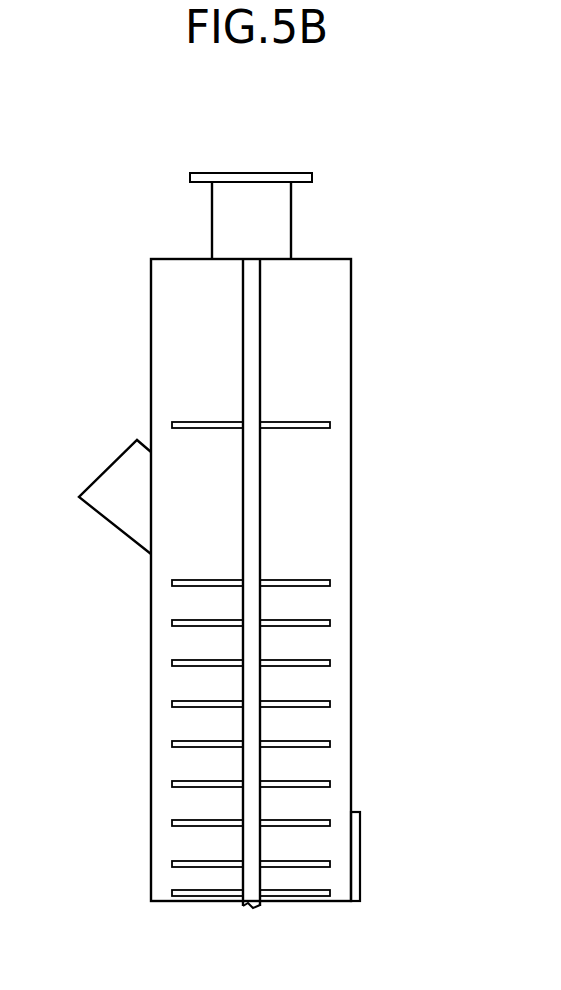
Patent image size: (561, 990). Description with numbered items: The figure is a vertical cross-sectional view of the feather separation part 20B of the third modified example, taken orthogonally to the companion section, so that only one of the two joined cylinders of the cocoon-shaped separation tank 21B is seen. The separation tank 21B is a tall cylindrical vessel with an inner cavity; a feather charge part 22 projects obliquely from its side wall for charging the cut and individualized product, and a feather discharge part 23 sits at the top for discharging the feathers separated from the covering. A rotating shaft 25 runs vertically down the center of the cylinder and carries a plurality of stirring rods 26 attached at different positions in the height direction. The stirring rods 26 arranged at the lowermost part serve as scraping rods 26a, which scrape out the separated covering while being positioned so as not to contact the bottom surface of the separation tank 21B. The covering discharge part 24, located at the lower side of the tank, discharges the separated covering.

The feather separation part 20B is at (436, 115).
The separation tank 21B is at (338, 291).
The feather charge part 22 is at (113, 462).
The feather discharge part 23 is at (291, 200).
The covering discharge part 24 is at (360, 855).
The rotating shaft 25 is at (260, 325).
The stirring rods 26 is at (321, 424).
The scraping rods 26a is at (302, 898).